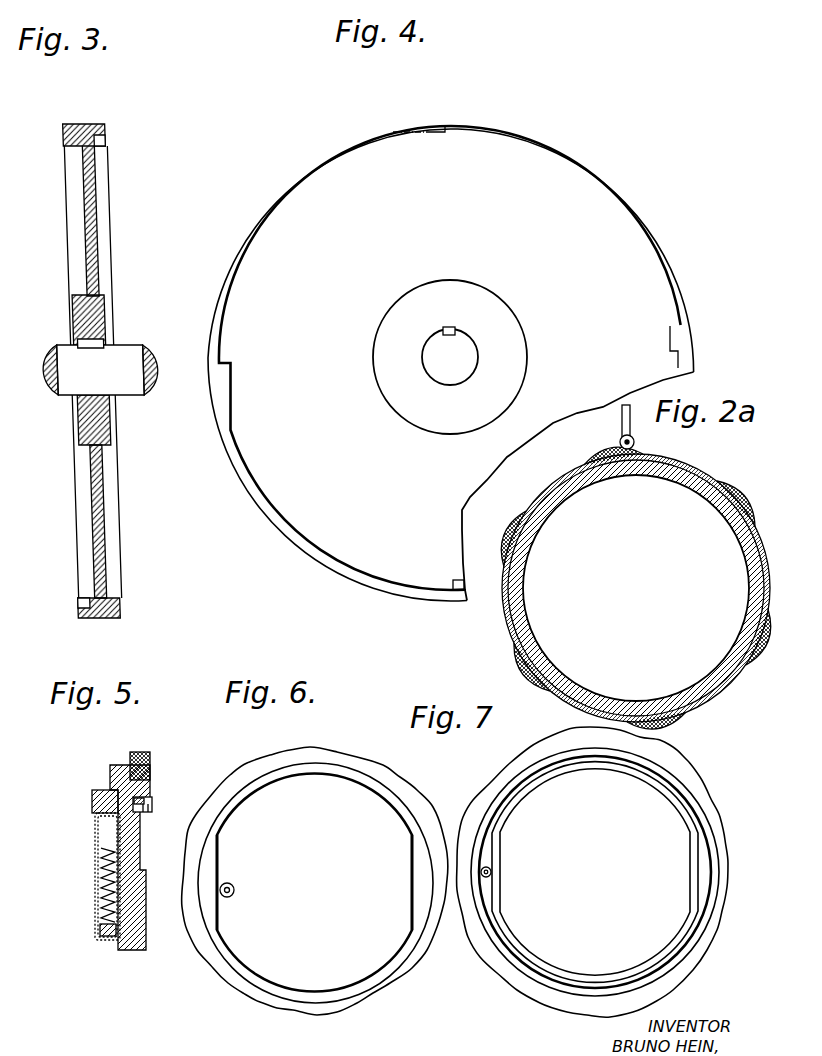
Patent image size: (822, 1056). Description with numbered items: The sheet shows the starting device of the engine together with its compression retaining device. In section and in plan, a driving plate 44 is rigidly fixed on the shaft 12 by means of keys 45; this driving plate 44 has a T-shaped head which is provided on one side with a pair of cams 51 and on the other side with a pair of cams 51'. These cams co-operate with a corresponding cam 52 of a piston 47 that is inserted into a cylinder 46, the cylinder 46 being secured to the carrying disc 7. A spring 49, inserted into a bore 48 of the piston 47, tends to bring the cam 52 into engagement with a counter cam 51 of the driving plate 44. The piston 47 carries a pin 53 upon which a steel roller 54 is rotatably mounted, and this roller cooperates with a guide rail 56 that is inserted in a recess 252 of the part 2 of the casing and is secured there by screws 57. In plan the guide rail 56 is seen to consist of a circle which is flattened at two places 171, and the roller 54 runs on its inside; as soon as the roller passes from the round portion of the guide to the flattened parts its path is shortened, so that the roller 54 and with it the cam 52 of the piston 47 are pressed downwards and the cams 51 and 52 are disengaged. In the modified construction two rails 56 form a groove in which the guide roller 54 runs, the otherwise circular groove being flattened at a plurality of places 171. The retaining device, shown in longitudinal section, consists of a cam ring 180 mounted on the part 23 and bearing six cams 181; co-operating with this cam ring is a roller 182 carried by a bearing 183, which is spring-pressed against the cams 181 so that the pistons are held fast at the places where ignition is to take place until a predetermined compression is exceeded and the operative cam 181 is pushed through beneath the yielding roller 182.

In FIG. 6, the part of the casing 2 is at (350, 763).
In FIG. 7, the part of the casing 2 is at (670, 763).
In FIG. 5, the carrying disc 7 is at (130, 859).
In FIG. 3, the shaft 12 is at (137, 369).
In FIG. 4, the shaft 12 is at (431, 376).
In FIG. 2A, the part 23 is at (712, 500).
In FIG. 3, the driving plate 44 is at (103, 331).
In FIG. 4, the driving plate 44 is at (570, 188).
In FIG. 3, the keys 45 is at (95, 349).
In FIG. 4, the keys 45 is at (457, 331).
In FIG. 5, the cylinder 46 is at (98, 851).
In FIG. 5, the piston 47 is at (110, 800).
In FIG. 5, the bore 48 is at (105, 906).
In FIG. 5, the spring 49 is at (105, 876).
In FIG. 3, the cams 51 is at (75, 371).
In FIG. 4, the cams 51 is at (453, 264).
In FIG. 3, the cams 51' is at (123, 147).
In FIG. 4, the cams 51' is at (438, 571).
In FIG. 5, the cam 52 is at (100, 790).
In FIG. 5, the pin 53 is at (150, 800).
In FIG. 5, the steel roller 54 is at (150, 809).
In FIG. 6, the steel roller 54 is at (233, 895).
In FIG. 7, the steel roller 54 is at (492, 876).
In FIG. 5, the guide rail 56 is at (146, 757).
In FIG. 6, the guide rail 56 is at (400, 806).
In FIG. 7, the guide rail 56 is at (706, 839).
In FIG. 5, the screws 57 is at (151, 761).
In FIG. 6, the flattened places 171 is at (218, 860).
In FIG. 2A, the cam ring 180 is at (549, 493).
In FIG. 2A, the cams 181 is at (593, 461).
In FIG. 2A, the roller 182 is at (636, 443).
In FIG. 2A, the bearing 183 is at (621, 426).
In FIG. 5, the recess 252 is at (142, 812).